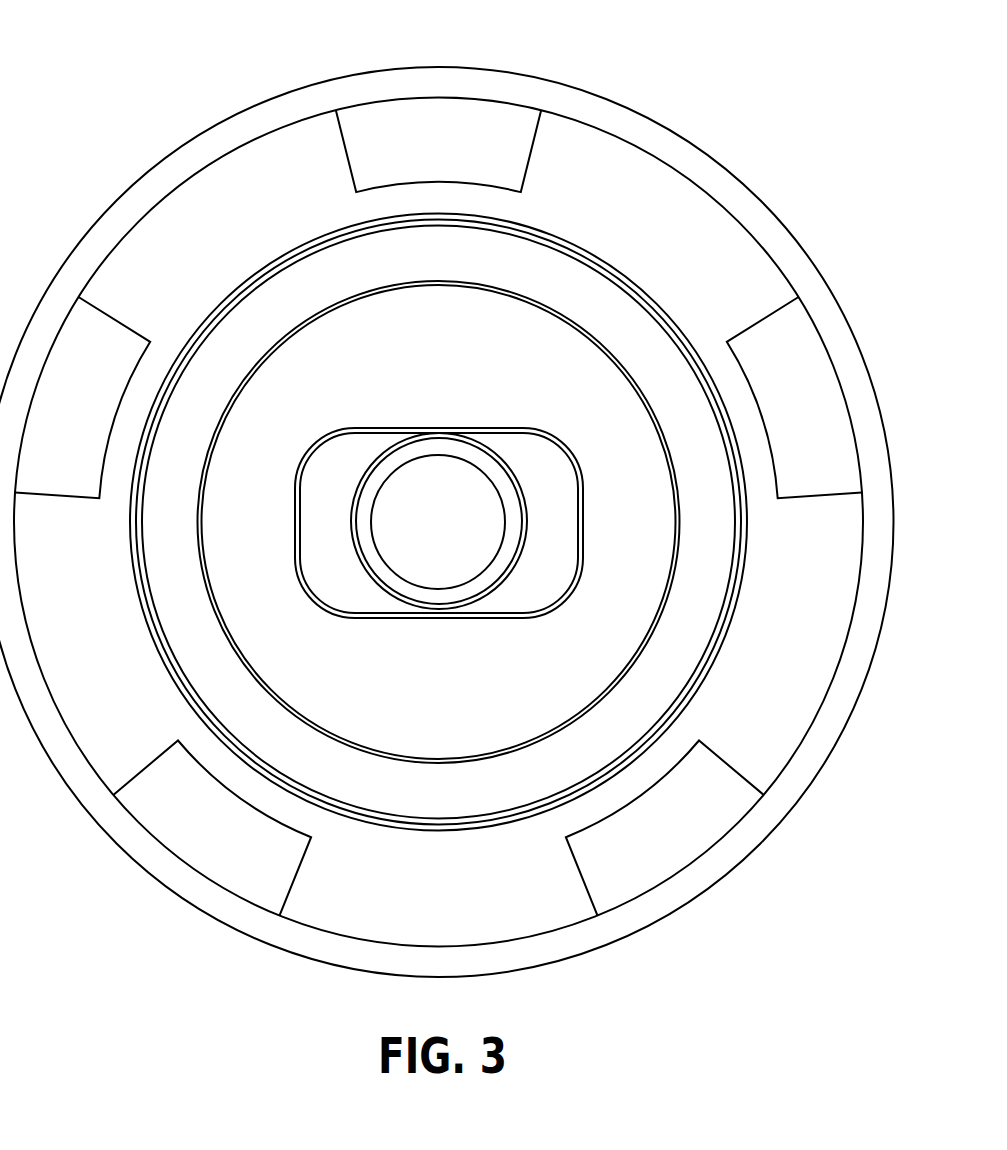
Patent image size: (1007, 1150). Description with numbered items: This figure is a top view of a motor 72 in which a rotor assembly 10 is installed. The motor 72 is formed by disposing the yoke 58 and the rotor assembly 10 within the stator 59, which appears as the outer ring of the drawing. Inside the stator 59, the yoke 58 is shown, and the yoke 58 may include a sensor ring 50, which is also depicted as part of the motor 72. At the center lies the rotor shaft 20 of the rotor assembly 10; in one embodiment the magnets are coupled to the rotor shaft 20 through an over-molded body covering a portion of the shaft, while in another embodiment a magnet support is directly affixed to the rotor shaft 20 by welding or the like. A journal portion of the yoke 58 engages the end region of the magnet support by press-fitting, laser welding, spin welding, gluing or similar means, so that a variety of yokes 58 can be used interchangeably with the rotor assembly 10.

The motor 72 is at (127, 83).
The stator 59 is at (528, 88).
The sensor ring 50 is at (732, 235).
The rotor assembly 10 is at (279, 357).
The yoke 58 is at (567, 292).
The rotor shaft 20 is at (377, 723).